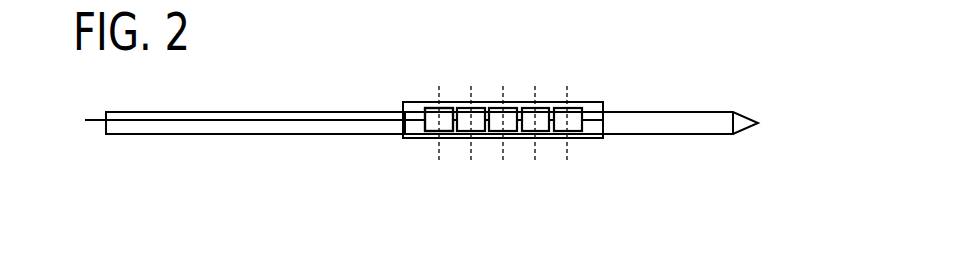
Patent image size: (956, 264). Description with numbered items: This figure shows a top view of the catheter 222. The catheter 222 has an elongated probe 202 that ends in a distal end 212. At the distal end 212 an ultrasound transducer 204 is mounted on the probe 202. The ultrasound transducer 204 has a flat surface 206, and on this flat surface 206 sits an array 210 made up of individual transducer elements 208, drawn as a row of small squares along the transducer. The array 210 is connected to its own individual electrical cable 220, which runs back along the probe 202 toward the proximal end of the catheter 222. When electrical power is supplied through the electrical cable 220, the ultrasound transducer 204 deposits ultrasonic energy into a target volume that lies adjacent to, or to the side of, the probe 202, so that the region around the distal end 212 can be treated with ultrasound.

The probe 202 is at (292, 112).
The ultrasound transducer 204 is at (605, 107).
The flat surface 206 is at (400, 120).
The transducer elements 208 is at (578, 112).
The array 210 is at (410, 103).
The distal end 212 is at (722, 160).
The electrical cable 220 is at (97, 122).
The catheter 222 is at (700, 89).